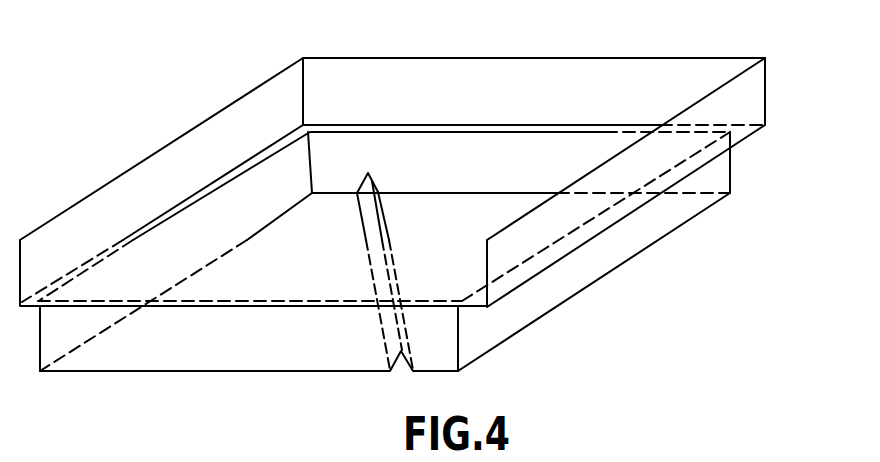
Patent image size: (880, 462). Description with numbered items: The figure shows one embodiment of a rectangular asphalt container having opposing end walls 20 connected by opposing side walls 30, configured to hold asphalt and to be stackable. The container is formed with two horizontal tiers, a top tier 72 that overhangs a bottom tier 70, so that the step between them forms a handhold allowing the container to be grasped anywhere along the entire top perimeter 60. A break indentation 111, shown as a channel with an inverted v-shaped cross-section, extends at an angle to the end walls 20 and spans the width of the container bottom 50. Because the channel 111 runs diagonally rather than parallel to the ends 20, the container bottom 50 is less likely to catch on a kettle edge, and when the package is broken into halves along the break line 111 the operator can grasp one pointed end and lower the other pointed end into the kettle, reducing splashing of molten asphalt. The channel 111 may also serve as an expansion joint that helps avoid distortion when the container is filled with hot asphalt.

The end wall 20 is at (600, 223).
The side wall 30 is at (685, 72).
The container bottom 50 is at (488, 213).
The top perimeter 60 is at (580, 56).
The bottom tier 70 is at (730, 171).
The top tier 72 is at (753, 106).
The break indentation 111 is at (385, 195).